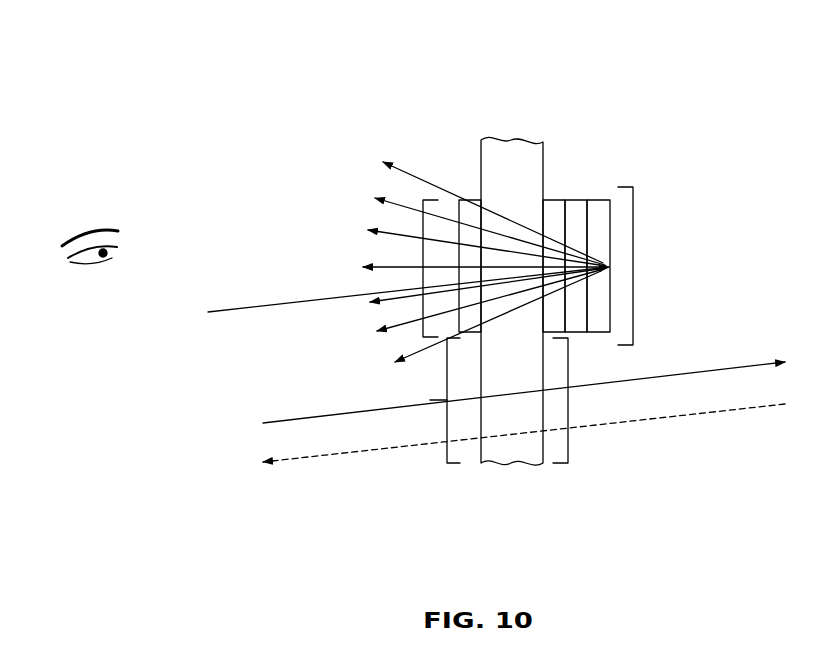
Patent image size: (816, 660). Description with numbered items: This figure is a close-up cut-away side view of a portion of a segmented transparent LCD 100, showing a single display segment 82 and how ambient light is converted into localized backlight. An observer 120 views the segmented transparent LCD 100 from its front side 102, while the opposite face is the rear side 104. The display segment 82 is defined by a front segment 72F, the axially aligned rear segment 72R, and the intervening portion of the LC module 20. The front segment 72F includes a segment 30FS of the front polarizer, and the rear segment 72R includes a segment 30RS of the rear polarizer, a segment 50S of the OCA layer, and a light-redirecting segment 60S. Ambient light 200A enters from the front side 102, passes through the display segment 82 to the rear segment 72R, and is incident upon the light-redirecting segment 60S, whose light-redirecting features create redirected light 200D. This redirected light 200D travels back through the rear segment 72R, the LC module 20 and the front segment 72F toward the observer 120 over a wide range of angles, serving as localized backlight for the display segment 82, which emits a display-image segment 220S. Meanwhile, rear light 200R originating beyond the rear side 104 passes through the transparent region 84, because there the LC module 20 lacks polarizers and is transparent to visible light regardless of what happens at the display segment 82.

The LC module 20 is at (508, 139).
The segment of front polarizer 30FS is at (468, 200).
The segment of rear polarizer 30RS is at (552, 200).
The segment of OCA layer 50S is at (573, 200).
The light-redirecting segment 60S is at (600, 200).
The display-image segment 220S is at (367, 183).
The ambient light 200A is at (278, 303).
The rear light 200R is at (655, 417).
The redirected light 200D is at (558, 218).
The display segment 82 is at (633, 266).
The transparent region 84 is at (568, 403).
The front segment 72F is at (467, 342).
The rear segment 72R is at (580, 344).
The segmented transparent LCD 100 is at (328, 95).
The front side 102 is at (290, 213).
The rear side 104 is at (690, 197).
The observer 120 is at (85, 220).